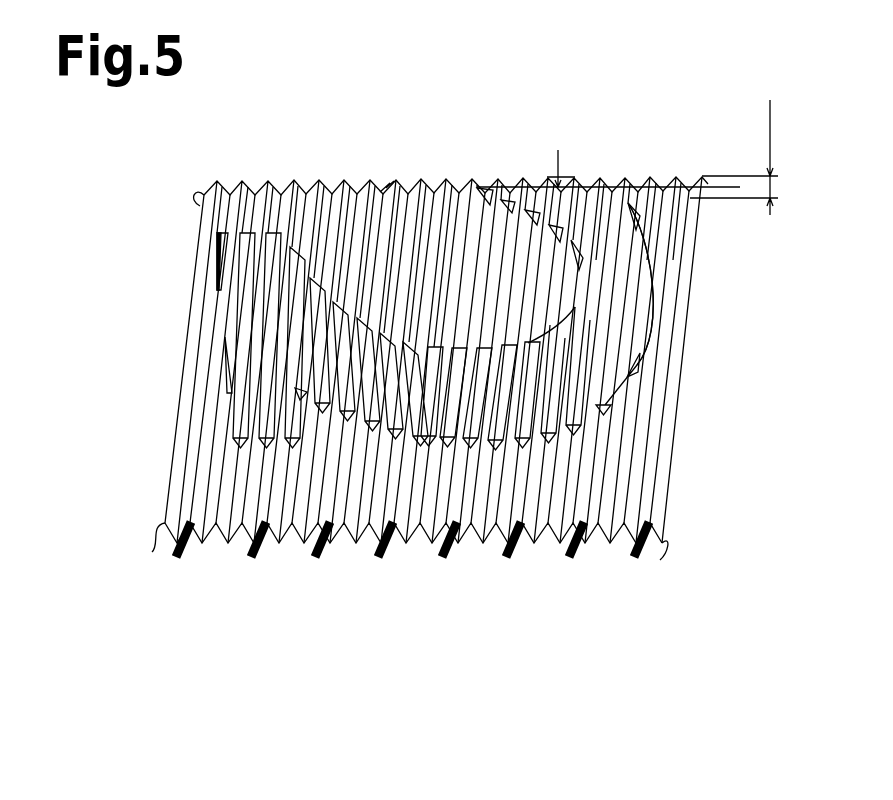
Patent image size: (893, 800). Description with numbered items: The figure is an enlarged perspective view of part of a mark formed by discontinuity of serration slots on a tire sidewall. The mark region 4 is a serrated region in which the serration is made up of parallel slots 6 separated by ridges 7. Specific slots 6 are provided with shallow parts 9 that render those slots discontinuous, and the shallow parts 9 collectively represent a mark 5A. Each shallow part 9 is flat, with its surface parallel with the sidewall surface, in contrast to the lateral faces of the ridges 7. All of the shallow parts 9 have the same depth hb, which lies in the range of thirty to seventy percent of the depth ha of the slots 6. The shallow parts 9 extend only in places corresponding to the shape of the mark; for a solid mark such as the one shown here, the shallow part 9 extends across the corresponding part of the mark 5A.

The mark region 4 is at (707, 421).
The serration slots 6 is at (410, 187).
The ridge 7 is at (420, 187).
The shallow parts 9 is at (652, 295).
The mark 5A is at (653, 328).
The depth of the shallow parts hb is at (566, 186).
The depth of the slots ha is at (770, 150).